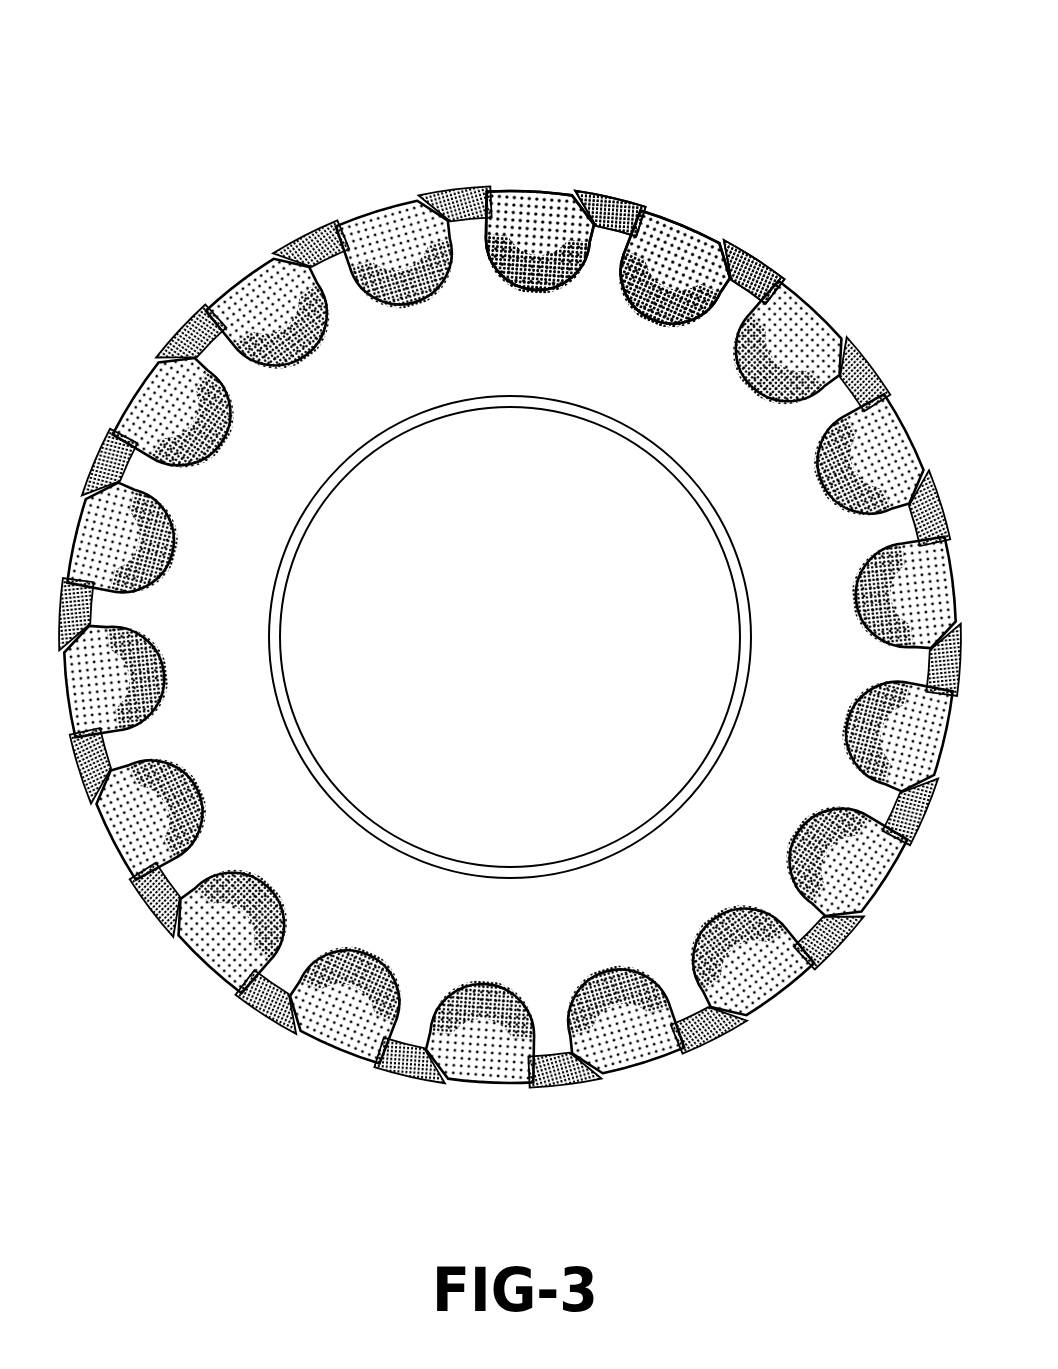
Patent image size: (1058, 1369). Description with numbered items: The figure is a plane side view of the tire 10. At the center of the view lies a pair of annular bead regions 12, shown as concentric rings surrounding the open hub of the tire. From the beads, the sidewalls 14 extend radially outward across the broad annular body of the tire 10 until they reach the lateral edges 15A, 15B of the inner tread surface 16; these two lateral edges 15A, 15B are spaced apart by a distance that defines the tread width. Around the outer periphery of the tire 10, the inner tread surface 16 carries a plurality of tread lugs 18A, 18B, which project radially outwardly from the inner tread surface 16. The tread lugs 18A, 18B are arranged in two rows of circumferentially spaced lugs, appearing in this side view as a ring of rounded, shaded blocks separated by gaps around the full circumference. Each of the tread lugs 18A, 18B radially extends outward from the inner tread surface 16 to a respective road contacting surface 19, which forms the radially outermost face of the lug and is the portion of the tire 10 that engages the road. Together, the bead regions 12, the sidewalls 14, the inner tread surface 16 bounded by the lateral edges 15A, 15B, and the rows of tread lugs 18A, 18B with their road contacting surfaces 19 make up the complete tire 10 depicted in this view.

The tire 10 is at (706, 80).
The annular bead regions 12 is at (736, 563).
The sidewalls 14 is at (720, 430).
The lateral edge 15A is at (650, 303).
The lateral edge 15B is at (694, 257).
The inner tread surface 16 is at (772, 355).
The tread lugs 18A is at (556, 197).
The tread lugs 18B is at (563, 197).
The road contacting surfaces 19 is at (430, 197).